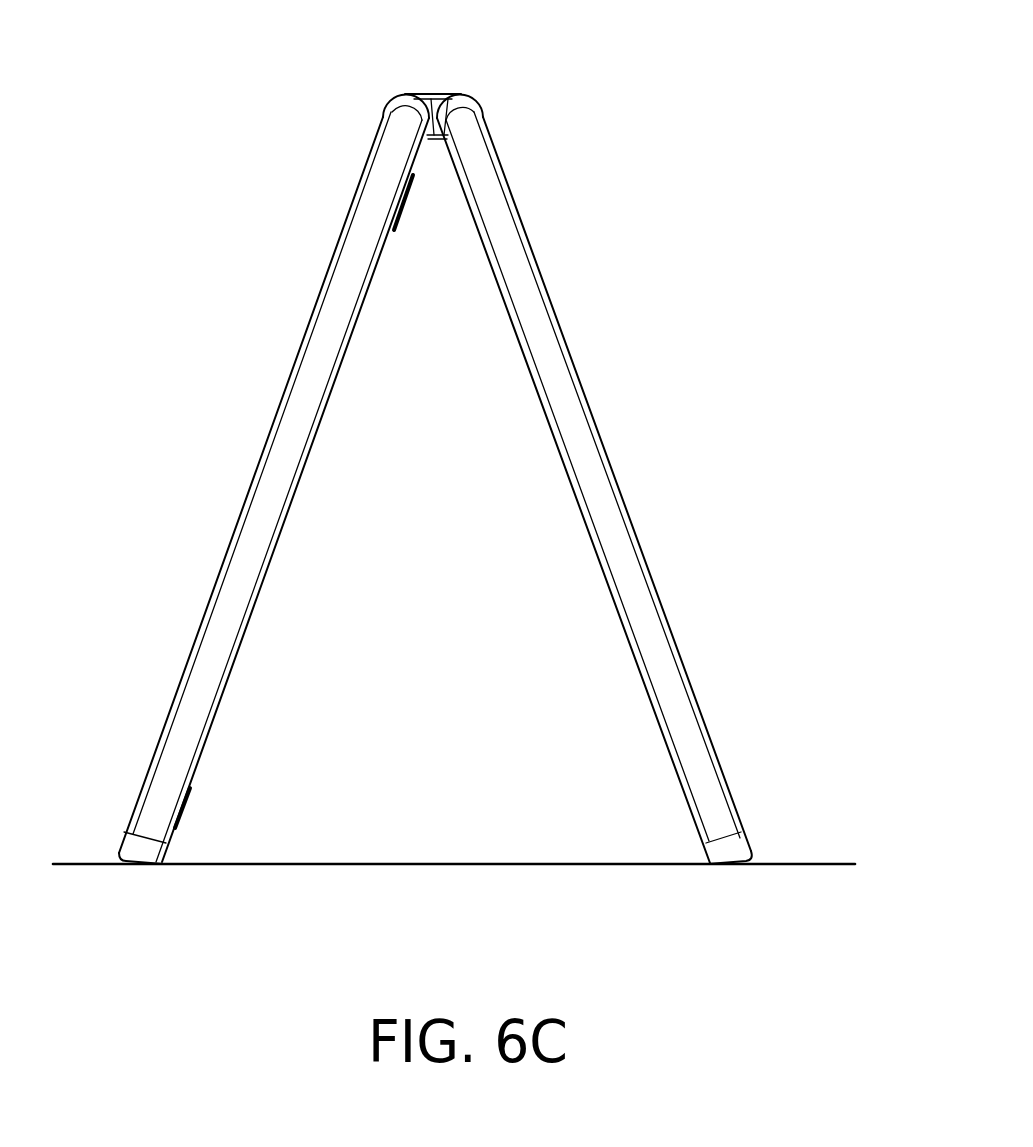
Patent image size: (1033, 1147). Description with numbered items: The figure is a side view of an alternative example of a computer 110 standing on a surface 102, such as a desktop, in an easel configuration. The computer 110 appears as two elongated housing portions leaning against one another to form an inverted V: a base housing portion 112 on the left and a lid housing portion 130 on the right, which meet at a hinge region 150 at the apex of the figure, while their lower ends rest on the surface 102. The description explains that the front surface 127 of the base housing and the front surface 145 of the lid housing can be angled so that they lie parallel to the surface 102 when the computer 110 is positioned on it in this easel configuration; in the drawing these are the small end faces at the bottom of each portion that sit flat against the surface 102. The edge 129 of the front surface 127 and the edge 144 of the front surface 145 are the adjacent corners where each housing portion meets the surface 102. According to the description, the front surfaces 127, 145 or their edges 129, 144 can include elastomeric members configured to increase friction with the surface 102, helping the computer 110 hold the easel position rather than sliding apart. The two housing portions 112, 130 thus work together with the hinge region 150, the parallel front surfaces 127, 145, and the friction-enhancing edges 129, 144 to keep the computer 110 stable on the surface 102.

The surface 102 is at (347, 866).
The computer 110 is at (420, 478).
The first housing portion 112 is at (259, 514).
The second housing portion 130 is at (594, 514).
The hinge 150 is at (438, 85).
The front surface of base housing 127 is at (138, 867).
The edge of front surface of base housing 129 is at (163, 867).
The edge of front surface of lid housing 144 is at (706, 867).
The front surface of lid housing 145 is at (735, 867).